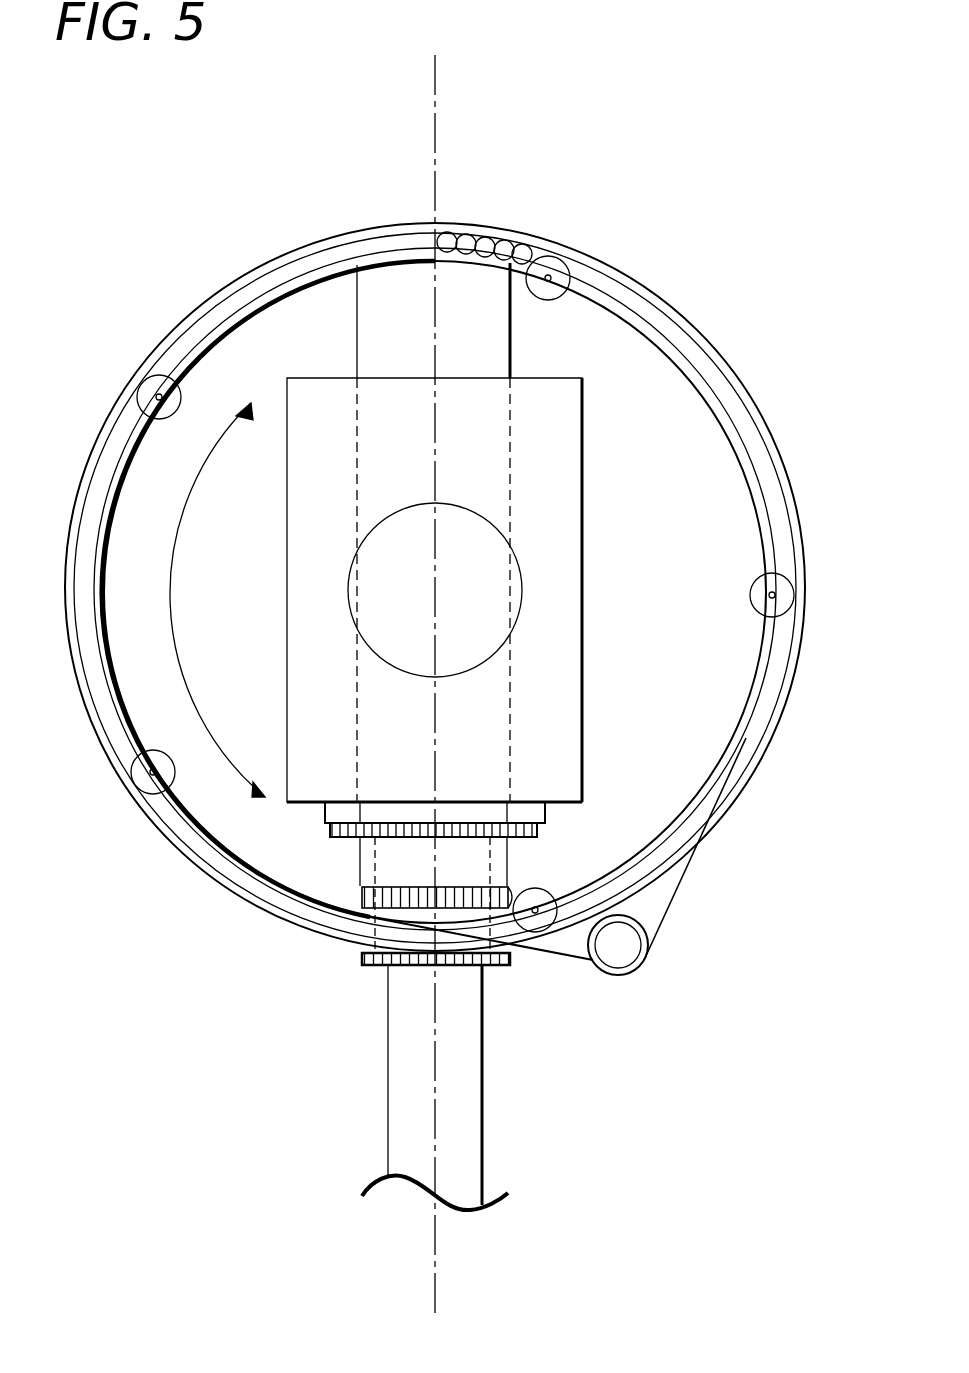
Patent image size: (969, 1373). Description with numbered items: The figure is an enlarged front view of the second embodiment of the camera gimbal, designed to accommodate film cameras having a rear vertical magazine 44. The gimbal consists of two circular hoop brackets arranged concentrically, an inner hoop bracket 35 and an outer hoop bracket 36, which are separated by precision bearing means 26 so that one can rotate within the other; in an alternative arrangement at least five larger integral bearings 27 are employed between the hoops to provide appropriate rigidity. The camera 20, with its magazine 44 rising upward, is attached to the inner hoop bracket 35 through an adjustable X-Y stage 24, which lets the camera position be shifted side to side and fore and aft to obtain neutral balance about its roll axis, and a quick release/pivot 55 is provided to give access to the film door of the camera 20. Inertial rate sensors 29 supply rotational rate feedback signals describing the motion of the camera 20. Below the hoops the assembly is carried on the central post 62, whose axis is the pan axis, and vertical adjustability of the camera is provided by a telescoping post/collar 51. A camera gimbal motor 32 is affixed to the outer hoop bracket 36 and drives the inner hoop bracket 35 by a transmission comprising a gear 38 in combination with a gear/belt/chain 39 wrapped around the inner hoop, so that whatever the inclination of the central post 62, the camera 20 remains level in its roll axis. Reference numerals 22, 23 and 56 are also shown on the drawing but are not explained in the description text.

The camera 20 is at (335, 404).
The central opening 22 is at (398, 577).
The lower retaining plate 23 is at (374, 965).
The adjustable X-Y stage 24 is at (565, 818).
The precision bearing means 26 is at (468, 240).
The larger integral bearings 27 is at (560, 268).
The inertial rate sensors 29 is at (350, 836).
The camera gimbal motor 32 is at (662, 955).
The inner hoop bracket 35 is at (695, 372).
The outer hoop bracket 36 is at (765, 435).
The gear 38 is at (625, 953).
The gear/belt/chain 39 is at (660, 905).
The rear vertical magazine 44 is at (385, 318).
The telescoping post/collar 51 is at (420, 887).
The quick release/pivot 55 is at (330, 812).
The central axis 56 is at (430, 145).
The central post 62 is at (405, 1085).